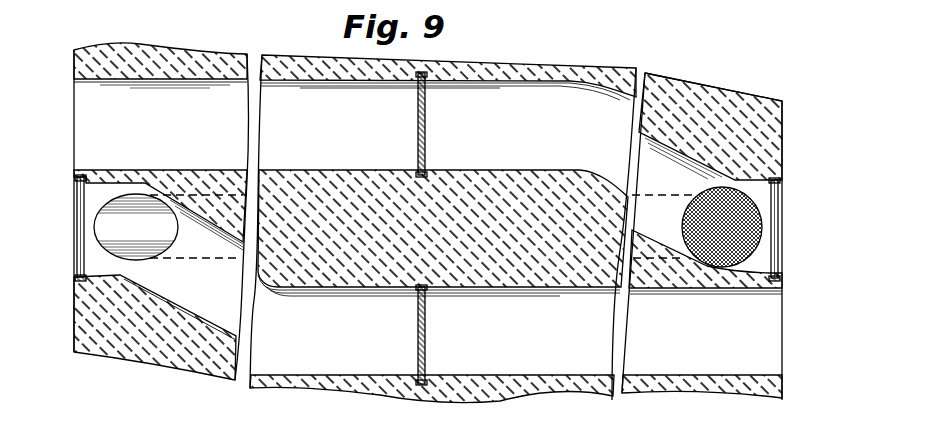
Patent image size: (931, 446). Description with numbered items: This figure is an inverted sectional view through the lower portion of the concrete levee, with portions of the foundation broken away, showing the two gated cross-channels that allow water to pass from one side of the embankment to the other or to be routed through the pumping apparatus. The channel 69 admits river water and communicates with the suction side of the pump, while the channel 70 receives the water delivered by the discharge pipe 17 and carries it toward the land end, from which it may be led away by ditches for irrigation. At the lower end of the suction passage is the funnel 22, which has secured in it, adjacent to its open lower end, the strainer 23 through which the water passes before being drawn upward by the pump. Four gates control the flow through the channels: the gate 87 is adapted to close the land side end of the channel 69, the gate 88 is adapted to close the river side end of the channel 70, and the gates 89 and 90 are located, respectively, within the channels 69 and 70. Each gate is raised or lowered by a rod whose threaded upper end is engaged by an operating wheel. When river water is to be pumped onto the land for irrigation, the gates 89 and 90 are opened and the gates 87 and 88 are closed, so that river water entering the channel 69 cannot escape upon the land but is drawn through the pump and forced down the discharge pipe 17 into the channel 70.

The cross-channel 69 is at (97, 123).
The gate 88 is at (78, 252).
The discharge pipe 17 is at (140, 238).
The gate 89 is at (426, 148).
The gate 90 is at (426, 298).
The funnel 22 is at (702, 192).
The strainer 23 is at (706, 222).
The gate 87 is at (779, 256).
The cross-channel 70 is at (700, 373).